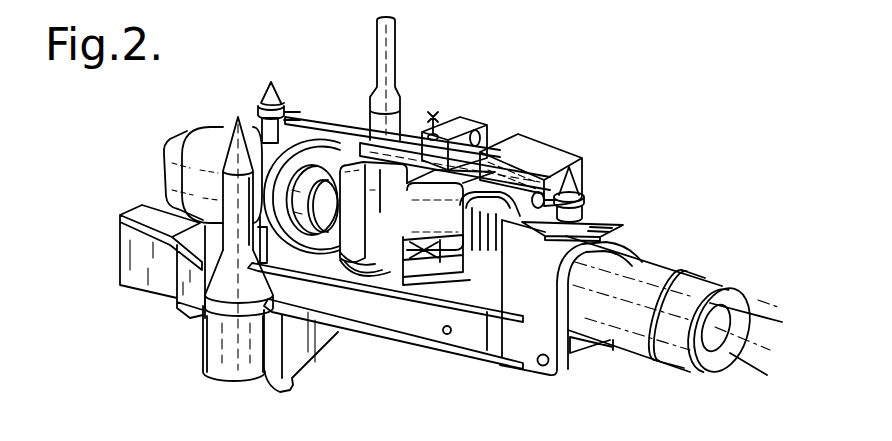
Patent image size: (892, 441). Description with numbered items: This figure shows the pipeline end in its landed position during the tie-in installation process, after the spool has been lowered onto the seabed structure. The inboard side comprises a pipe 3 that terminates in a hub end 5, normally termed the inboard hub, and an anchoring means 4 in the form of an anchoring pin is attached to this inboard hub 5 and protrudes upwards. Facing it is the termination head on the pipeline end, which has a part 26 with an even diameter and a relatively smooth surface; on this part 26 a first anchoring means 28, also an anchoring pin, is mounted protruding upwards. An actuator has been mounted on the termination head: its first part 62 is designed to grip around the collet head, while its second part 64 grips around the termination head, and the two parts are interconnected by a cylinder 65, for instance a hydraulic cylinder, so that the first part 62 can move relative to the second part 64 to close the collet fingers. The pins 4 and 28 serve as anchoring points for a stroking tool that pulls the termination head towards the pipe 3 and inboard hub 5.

The pipe 3 is at (187, 152).
The anchoring means 4 is at (273, 93).
The hub end 5 is at (313, 167).
The first part 62 is at (462, 118).
The second part 64 is at (538, 145).
The first anchoring means 28 is at (583, 192).
The part of the termination 26 is at (647, 262).
The cylinder 65 is at (438, 278).